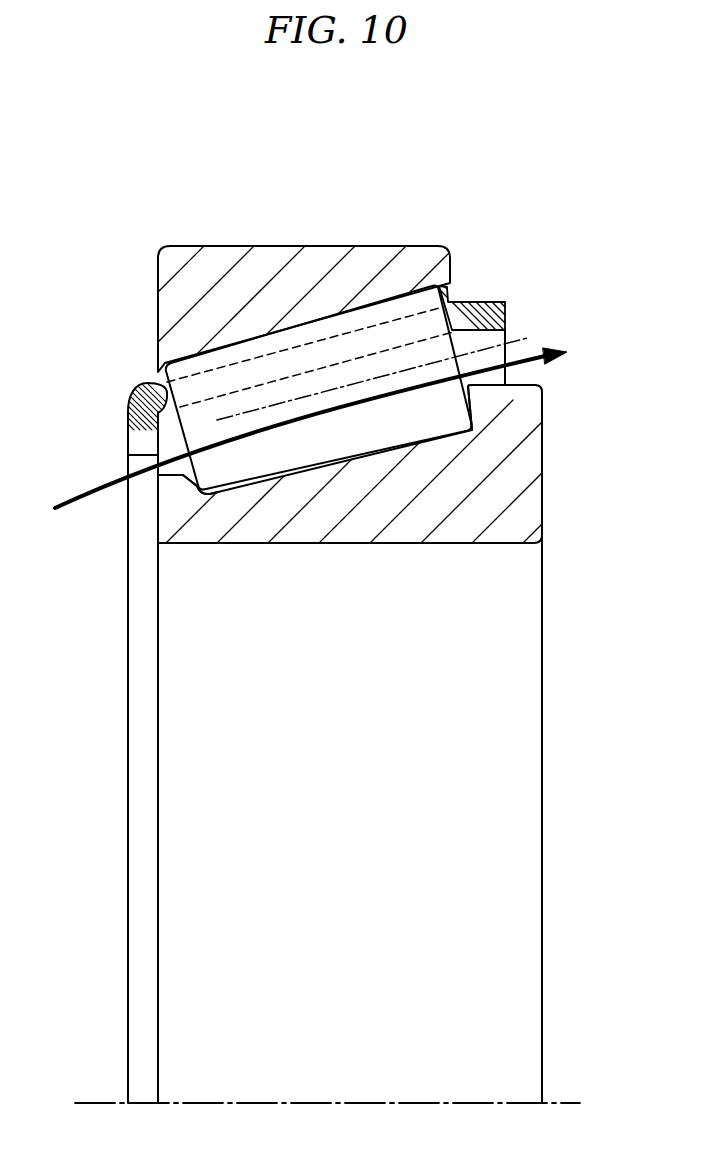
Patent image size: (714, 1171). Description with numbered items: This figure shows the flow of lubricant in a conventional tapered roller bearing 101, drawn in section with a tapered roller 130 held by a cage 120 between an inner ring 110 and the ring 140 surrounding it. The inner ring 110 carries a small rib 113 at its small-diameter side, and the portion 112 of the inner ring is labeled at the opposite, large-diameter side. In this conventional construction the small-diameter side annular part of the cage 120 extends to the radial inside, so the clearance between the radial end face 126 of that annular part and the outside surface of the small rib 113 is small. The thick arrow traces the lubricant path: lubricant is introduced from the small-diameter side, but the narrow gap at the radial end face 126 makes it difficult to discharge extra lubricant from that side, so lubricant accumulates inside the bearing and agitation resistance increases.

The tapered roller bearing 101 is at (375, 622).
The inner ring 110 is at (545, 485).
The large rib of inner ring 112 is at (527, 405).
The small rib 113 is at (173, 500).
The cage 120 is at (130, 403).
The radial end face 126 is at (143, 458).
The tapered roller 130 is at (448, 293).
The outer ring 140 is at (332, 247).